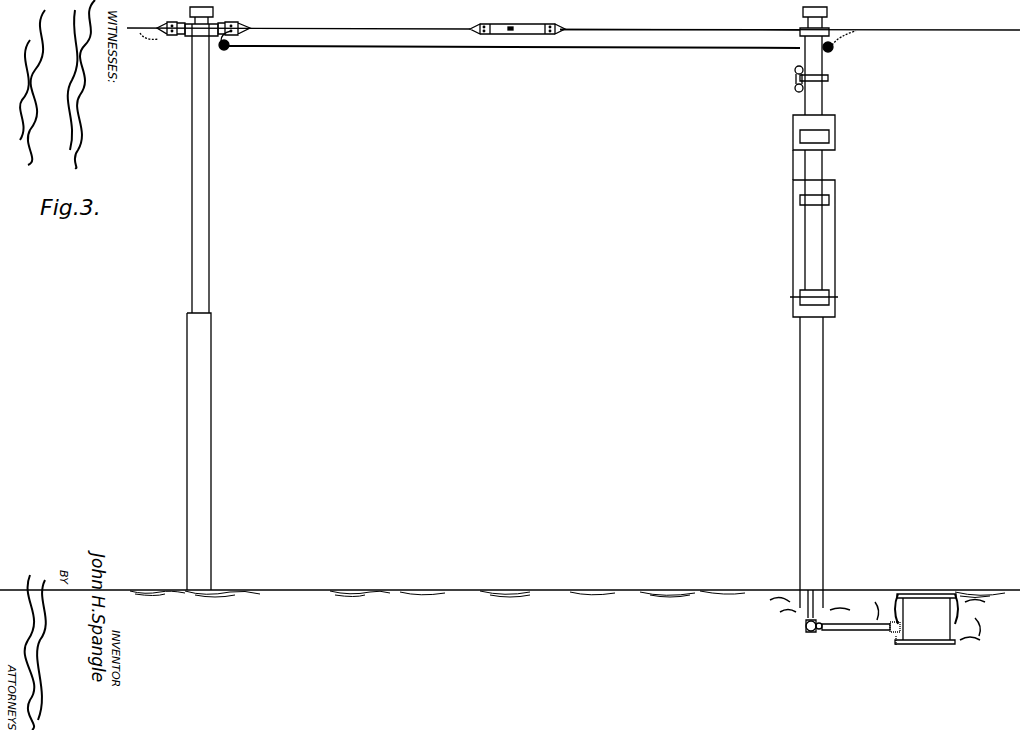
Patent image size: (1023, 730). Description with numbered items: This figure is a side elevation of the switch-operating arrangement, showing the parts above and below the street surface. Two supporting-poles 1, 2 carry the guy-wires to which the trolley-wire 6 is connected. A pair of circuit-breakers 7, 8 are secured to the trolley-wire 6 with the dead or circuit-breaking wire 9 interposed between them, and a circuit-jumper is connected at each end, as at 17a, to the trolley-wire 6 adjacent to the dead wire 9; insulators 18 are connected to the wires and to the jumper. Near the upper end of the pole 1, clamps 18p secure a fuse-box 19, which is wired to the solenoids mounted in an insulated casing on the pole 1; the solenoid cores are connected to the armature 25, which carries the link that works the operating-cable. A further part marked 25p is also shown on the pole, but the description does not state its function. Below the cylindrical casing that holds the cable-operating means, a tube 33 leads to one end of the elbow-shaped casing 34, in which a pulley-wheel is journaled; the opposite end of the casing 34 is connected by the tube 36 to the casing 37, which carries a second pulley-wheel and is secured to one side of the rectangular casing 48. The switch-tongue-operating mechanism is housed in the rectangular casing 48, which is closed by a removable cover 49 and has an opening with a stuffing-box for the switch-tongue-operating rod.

The supporting-pole 1 is at (800, 352).
The supporting-pole 2 is at (201, 298).
The trolley-wire 6 is at (682, 30).
The circuit-breaker 7 is at (226, 22).
The circuit-breaker 8 is at (505, 24).
The dead or circuit-breaking wire 9 is at (343, 29).
The jumper connection 17a is at (155, 41).
The insulators 18 is at (226, 51).
The clamps 18p is at (800, 143).
The fuse-box 19 is at (793, 127).
The armature 25 is at (793, 250).
The sleeve 25p is at (800, 201).
The tube 33 is at (800, 592).
The elbow-shaped casing 34 is at (811, 633).
The tube 36 is at (868, 631).
The casing 37 is at (896, 645).
The rectangular casing 48 is at (926, 619).
The removable cover 49 is at (932, 594).